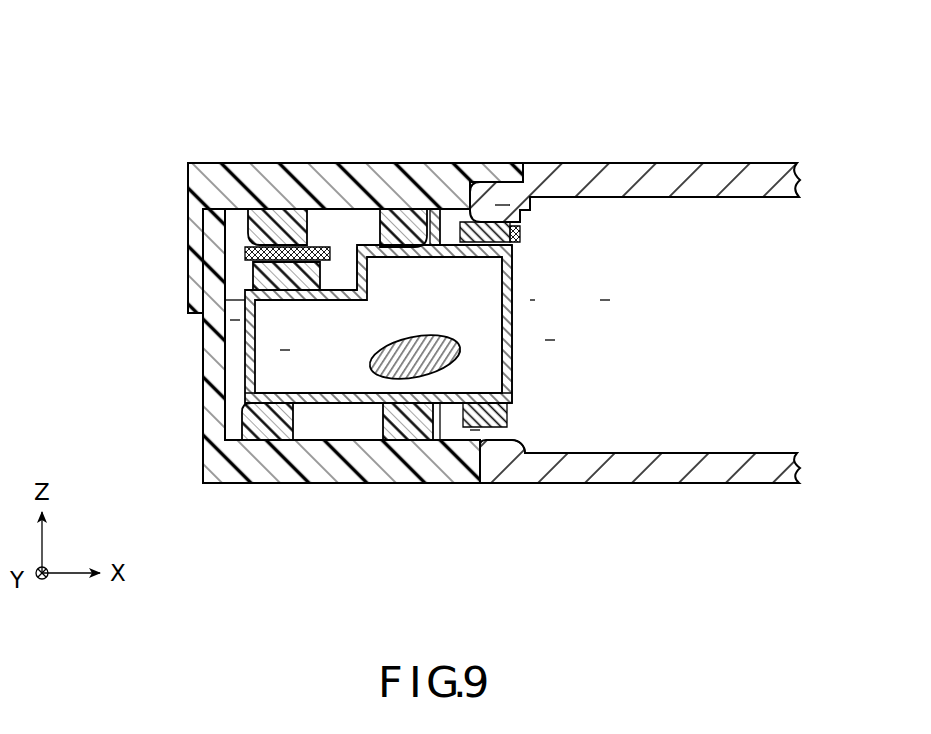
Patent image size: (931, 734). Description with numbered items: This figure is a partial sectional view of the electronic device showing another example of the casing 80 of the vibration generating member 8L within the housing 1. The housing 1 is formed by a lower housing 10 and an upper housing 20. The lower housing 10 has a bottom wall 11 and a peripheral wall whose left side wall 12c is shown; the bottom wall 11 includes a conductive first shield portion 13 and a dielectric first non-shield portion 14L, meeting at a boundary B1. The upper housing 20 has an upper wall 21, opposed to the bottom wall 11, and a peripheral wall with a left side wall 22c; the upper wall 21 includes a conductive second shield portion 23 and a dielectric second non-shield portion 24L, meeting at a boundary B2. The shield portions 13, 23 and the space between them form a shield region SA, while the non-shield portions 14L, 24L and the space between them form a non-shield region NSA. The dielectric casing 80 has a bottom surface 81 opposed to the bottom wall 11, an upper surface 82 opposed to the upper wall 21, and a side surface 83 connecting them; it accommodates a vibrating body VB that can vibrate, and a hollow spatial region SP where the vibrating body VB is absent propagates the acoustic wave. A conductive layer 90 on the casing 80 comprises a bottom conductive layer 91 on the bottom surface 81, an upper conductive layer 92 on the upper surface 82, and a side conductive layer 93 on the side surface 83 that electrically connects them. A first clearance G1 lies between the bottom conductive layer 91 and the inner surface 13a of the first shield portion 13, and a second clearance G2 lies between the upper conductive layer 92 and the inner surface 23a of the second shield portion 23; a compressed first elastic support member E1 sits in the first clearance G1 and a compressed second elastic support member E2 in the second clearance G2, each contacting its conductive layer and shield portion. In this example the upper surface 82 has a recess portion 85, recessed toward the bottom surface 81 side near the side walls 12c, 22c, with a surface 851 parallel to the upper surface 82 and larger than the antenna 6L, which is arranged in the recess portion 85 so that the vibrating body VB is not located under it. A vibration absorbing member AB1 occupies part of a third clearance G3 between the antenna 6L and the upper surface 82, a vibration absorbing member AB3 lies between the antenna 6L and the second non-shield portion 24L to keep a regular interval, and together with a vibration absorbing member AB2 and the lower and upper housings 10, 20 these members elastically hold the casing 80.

The housing 1 is at (128, 72).
The upper housing 20 is at (203, 92).
The side wall 22c is at (157, 212).
The second non-shield portion 24L is at (299, 176).
The upper wall 21 is at (698, 138).
The second shield portion 23 is at (636, 176).
The inner surface 23a is at (512, 231).
The lower housing 10 is at (221, 525).
The side wall 12c is at (136, 405).
The first non-shield portion 14L is at (325, 475).
The bottom wall 11 is at (689, 505).
The first shield portion 13 is at (614, 470).
The inner surface 13a is at (518, 428).
The recess portion 85 is at (343, 243).
The antenna 6L is at (245, 252).
The vibration absorbing member AB3 is at (270, 228).
The casing 80 is at (233, 341).
The bottom surface 81 is at (333, 416).
The upper surface 82 is at (352, 290).
The surface 851 is at (303, 300).
The side surface 83 is at (514, 268).
The side conductive layer 93 is at (514, 297).
The vibrating body VB is at (420, 354).
The vibration absorbing member AB2 is at (255, 404).
The bottom conductive layer 91 is at (514, 417).
The upper conductive layer 92 is at (516, 238).
The first clearance G1 is at (445, 432).
The second clearance G2 is at (438, 213).
The third clearance G3 is at (230, 297).
The first elastic support member E1 is at (474, 435).
The second elastic support member E2 is at (503, 200).
The boundary B1 is at (511, 506).
The boundary B2 is at (487, 148).
The vibration absorbing member AB1 is at (233, 304).
The non-shield region NSA is at (250, 331).
The spatial region SP is at (280, 358).
The shield region SA is at (653, 330).
The conductive layer 90 is at (540, 329).
The vibration generating member 8L is at (560, 354).